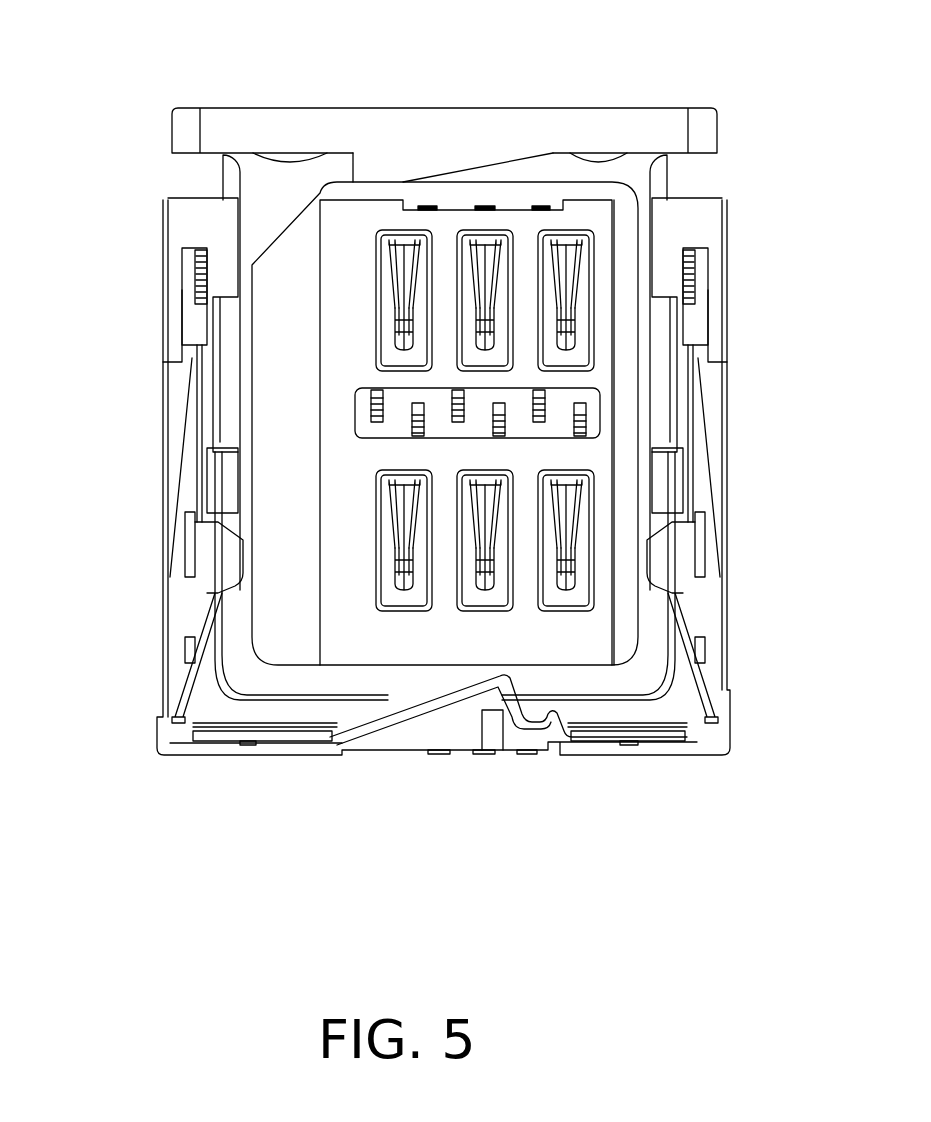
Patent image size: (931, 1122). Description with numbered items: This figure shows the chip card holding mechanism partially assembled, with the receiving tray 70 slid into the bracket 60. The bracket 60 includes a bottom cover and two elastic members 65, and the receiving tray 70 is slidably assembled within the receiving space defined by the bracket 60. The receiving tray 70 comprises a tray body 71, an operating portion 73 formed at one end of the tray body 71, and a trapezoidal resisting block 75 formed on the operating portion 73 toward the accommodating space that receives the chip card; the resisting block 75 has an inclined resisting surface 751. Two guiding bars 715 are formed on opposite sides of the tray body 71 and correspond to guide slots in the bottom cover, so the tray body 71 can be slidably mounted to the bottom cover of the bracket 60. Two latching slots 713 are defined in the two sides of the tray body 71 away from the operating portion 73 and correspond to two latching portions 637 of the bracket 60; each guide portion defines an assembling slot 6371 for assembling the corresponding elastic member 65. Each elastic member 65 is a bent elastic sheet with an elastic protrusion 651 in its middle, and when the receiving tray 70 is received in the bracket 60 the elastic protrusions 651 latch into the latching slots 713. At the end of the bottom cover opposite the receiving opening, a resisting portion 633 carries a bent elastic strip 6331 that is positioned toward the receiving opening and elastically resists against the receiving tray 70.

The receiving tray 70 is at (640, 132).
The tray body 71 is at (267, 182).
The operating portion 73 is at (337, 133).
The resisting block 75 is at (383, 180).
The inclined resisting surface 751 is at (492, 164).
The guiding bar 715 is at (660, 180).
The latching portion 637 is at (165, 218).
The assembling slot 6371 is at (202, 285).
The elastic member 65 is at (202, 435).
The elastic protrusion 651 is at (228, 565).
The bracket 60 is at (723, 428).
The latching slot 713 is at (653, 538).
The resisting portion 633 is at (388, 752).
The elastic strip 6331 is at (500, 682).